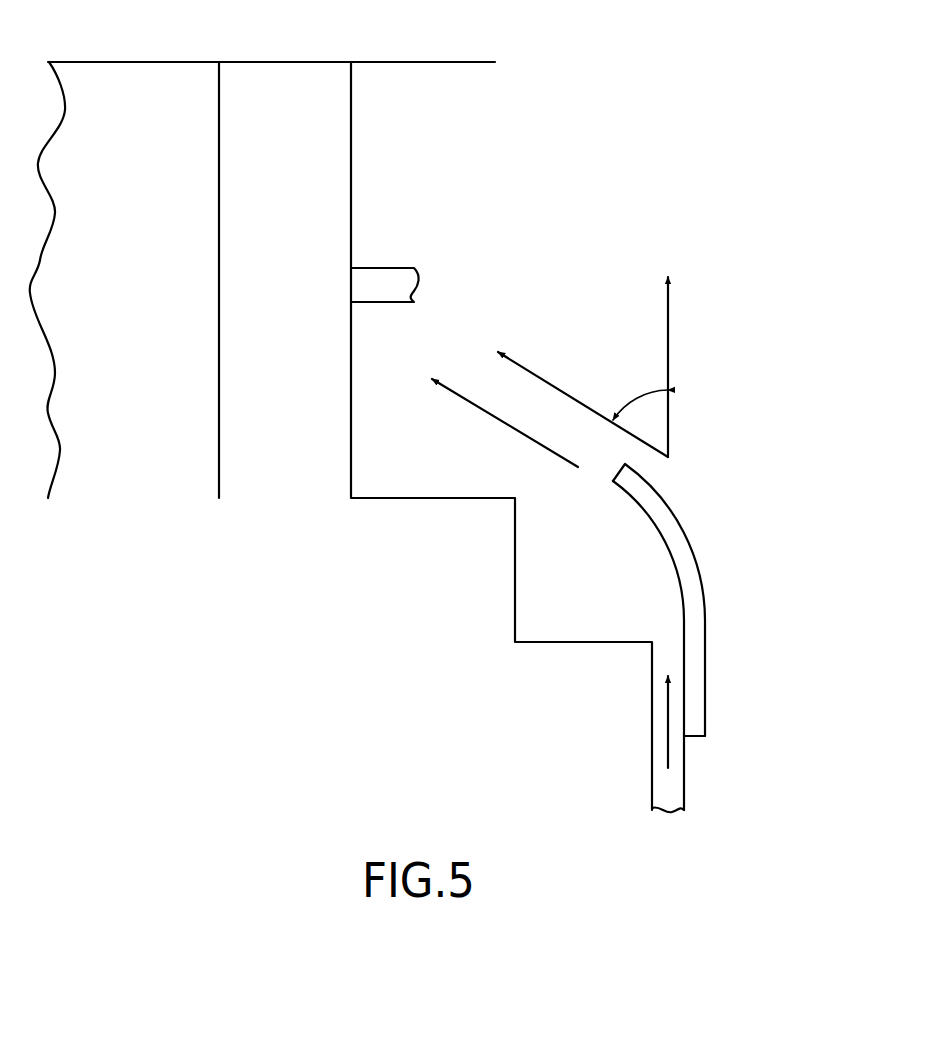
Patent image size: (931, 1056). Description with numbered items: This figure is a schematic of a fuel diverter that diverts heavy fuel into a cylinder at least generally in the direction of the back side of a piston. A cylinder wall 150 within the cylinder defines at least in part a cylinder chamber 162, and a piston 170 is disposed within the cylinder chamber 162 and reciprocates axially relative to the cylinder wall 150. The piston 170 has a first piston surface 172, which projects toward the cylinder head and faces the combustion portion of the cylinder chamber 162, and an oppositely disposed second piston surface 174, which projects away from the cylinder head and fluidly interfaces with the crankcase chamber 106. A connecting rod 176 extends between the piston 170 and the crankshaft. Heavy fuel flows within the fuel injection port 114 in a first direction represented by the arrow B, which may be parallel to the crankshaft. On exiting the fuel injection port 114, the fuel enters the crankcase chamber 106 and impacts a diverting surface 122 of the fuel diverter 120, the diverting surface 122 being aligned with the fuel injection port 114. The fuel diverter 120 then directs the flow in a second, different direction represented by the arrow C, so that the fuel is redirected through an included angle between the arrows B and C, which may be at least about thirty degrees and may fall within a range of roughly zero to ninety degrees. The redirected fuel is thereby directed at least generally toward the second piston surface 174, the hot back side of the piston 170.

The cylinder wall 150 is at (100, 66).
The cylinder chamber 162 is at (146, 335).
The piston 170 is at (302, 303).
The first piston surface 172 is at (219, 215).
The second piston surface 174 is at (351, 154).
The connecting rod 176 is at (378, 268).
The crankcase chamber 106 is at (600, 535).
The fuel injection port 114 is at (678, 787).
The fuel diverter 120 is at (700, 626).
The diverting surface 122 is at (665, 545).
The first direction arrow B is at (667, 720).
The second direction arrow C is at (503, 422).